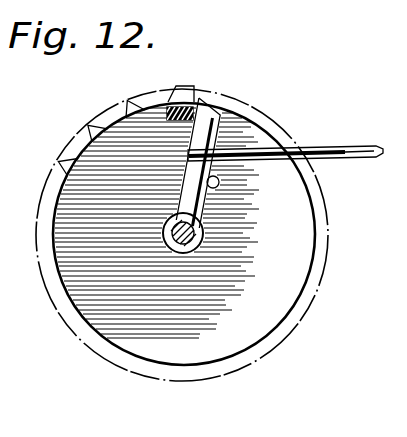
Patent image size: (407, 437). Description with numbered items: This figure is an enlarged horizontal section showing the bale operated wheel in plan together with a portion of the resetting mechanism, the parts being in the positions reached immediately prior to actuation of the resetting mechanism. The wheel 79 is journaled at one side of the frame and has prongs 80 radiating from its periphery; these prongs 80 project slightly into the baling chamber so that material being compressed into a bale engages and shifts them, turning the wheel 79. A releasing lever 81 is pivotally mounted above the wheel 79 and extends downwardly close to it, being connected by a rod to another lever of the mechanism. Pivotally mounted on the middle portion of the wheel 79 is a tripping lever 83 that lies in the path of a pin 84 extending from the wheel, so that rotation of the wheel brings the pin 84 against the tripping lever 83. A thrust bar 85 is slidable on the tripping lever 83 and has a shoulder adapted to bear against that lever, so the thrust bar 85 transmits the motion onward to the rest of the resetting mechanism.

The wheel 79 is at (138, 345).
The prongs 80 is at (93, 118).
The releasing lever 81 is at (194, 106).
The tripping lever 83 is at (192, 203).
The pin 84 is at (219, 182).
The thrust bar 85 is at (343, 148).